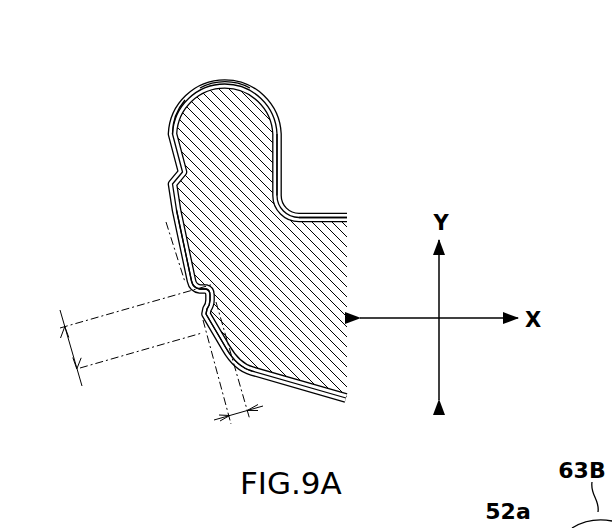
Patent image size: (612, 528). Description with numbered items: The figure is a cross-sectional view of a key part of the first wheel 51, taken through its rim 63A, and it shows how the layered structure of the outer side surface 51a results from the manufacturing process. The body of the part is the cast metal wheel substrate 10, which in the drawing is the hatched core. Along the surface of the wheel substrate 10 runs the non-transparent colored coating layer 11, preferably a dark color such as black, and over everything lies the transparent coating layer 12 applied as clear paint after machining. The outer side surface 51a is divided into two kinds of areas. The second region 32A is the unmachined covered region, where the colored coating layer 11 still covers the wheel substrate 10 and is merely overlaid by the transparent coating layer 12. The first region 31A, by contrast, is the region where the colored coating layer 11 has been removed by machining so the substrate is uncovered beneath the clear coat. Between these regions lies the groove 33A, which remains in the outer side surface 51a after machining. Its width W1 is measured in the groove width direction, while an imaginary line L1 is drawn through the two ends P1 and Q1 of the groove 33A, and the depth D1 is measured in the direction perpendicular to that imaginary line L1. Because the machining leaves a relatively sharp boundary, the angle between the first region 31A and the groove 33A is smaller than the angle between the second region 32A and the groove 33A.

The wheel substrate 10 is at (234, 118).
The colored coating layer 11 is at (328, 212).
The transparent coating layer 12 is at (282, 140).
The first wheel 51 is at (298, 72).
The outer side surface 51a is at (172, 106).
The rim 63A is at (223, 79).
The first region 31A is at (168, 200).
The second region 32A is at (212, 352).
The groove 33A is at (203, 296).
The imaginary line L1 is at (172, 257).
The end of the groove P1 is at (184, 287).
The end of the groove Q1 is at (200, 328).
The width of the groove W1 is at (120, 335).
The depth of the groove D1 is at (234, 376).